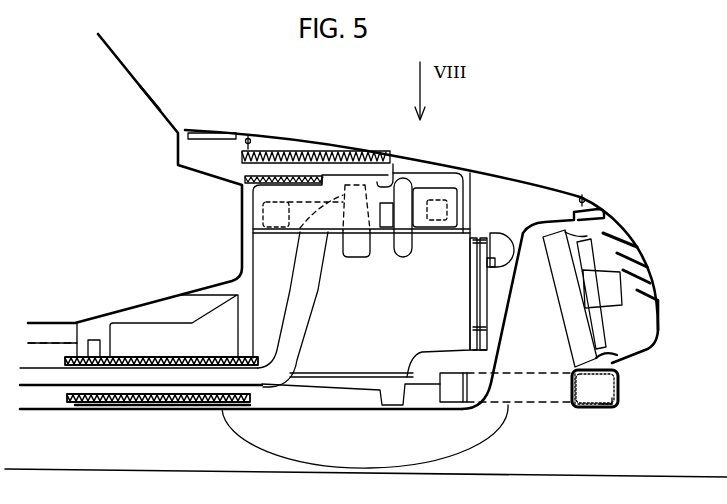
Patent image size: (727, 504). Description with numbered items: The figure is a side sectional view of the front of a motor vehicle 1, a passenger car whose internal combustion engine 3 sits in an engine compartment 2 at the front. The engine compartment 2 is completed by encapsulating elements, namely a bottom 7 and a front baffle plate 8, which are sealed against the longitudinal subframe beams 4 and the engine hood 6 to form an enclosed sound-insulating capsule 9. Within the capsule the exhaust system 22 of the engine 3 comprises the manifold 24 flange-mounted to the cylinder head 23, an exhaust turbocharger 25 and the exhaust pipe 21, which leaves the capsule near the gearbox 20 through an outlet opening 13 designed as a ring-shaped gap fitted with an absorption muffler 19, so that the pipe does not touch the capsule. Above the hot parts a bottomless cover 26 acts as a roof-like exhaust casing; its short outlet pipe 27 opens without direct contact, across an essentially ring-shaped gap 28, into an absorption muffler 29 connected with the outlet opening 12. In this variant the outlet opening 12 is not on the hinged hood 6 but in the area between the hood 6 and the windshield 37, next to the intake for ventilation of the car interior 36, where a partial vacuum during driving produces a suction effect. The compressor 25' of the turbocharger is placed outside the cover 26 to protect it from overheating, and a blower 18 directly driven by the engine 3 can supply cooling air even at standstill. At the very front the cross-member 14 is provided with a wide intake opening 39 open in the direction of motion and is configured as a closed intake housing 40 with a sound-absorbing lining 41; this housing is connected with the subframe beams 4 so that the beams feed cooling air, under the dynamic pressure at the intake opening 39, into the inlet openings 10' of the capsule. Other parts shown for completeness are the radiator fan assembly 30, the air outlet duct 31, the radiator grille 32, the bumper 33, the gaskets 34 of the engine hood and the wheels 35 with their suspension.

The motor vehicle 1 is at (123, 58).
The engine compartment 2 is at (516, 215).
The internal combustion engine 3 is at (378, 333).
The longitudinal subframe beams 4 is at (507, 400).
The engine hood 6 is at (500, 170).
The bottom 7 is at (315, 412).
The front baffle plate 8 is at (502, 316).
The sound-insulating capsule 9 is at (548, 184).
The inlet openings 10' is at (451, 407).
The outlet opening 12 is at (209, 132).
The outlet opening 13 is at (66, 393).
The front cross-member 14 is at (600, 408).
The blower 18 is at (490, 270).
The absorption muffler 19 is at (120, 403).
The gearbox 20 is at (161, 347).
The exhaust pipe 21 is at (265, 390).
The exhaust system 22 is at (388, 233).
The cylinder head 23 is at (440, 172).
The manifold 24 is at (276, 229).
The exhaust turbocharger 25 is at (347, 236).
The compressor 25' is at (410, 235).
The cover 26 is at (283, 197).
The outlet pipe 27 is at (366, 173).
The ring-shaped gap 28 is at (326, 175).
The absorption muffler 29 is at (313, 150).
The radiator fan assembly 30 is at (607, 324).
The air outlet duct 31 is at (543, 360).
The radiator grille 32 is at (640, 272).
The bumper 33 is at (658, 328).
The gaskets 34 is at (247, 137).
The wheels 35 is at (243, 430).
The car interior 36 is at (120, 141).
The windshield 37 is at (153, 99).
The intake opening 39 is at (619, 388).
The intake housing 40 is at (573, 388).
The sound-absorbing lining 41 is at (584, 408).